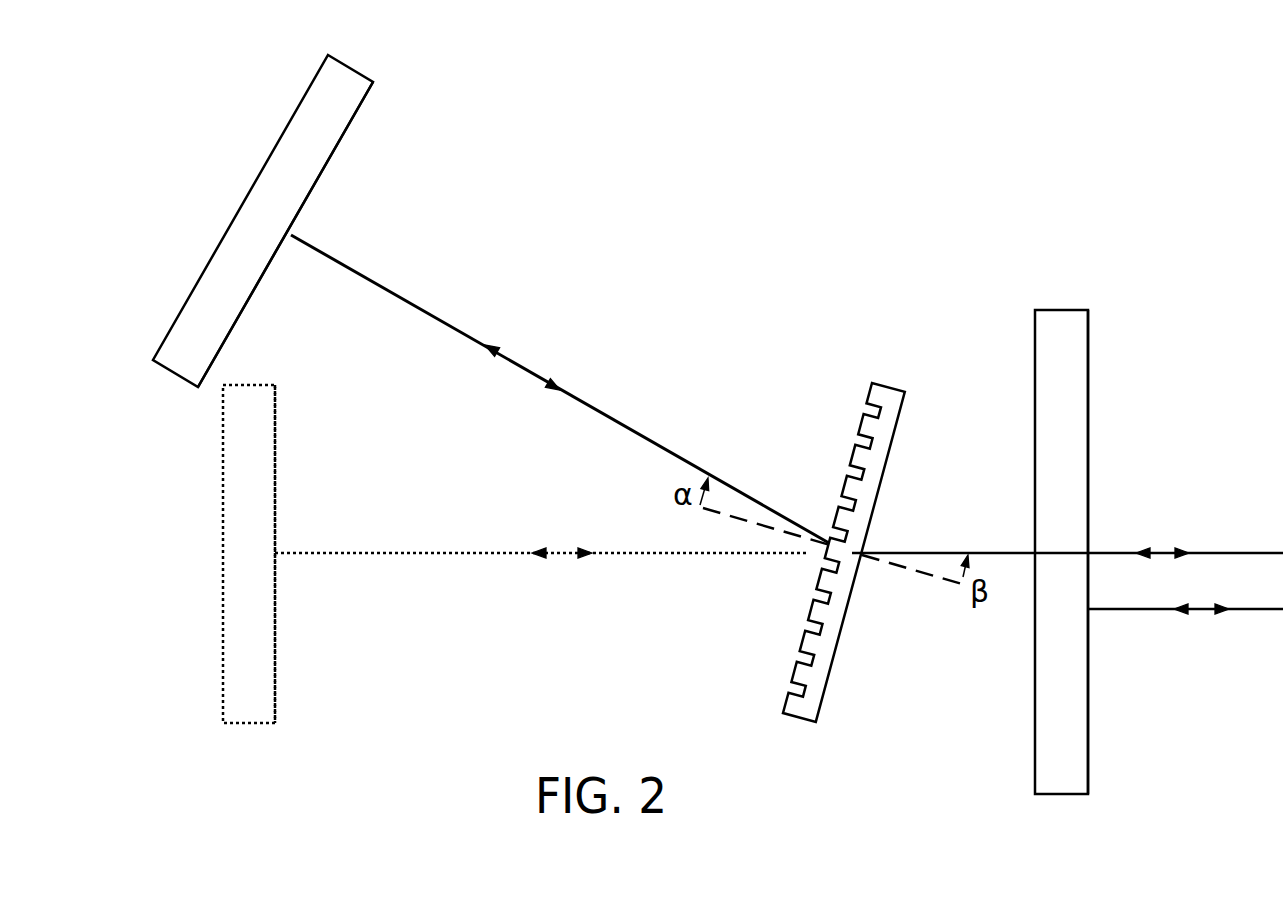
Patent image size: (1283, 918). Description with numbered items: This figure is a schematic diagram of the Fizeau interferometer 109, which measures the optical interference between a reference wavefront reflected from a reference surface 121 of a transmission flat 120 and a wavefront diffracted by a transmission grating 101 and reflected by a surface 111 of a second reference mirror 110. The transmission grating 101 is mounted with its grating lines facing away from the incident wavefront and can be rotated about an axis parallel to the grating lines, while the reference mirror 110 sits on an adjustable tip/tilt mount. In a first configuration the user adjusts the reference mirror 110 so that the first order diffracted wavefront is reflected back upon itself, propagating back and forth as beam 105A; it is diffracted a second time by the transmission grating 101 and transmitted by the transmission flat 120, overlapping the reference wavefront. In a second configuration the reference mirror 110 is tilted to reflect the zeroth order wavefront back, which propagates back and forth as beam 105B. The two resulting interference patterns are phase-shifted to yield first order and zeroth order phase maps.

The transmission grating 101 is at (887, 382).
The first order beam 105A is at (613, 418).
The zeroth order beam 105B is at (675, 555).
The Fizeau interferometer 109 is at (498, 694).
The second reference mirror 110 is at (350, 84).
The surface of second reference mirror 111 is at (347, 132).
The transmission flat 120 is at (1077, 341).
The reference surface 121 is at (1089, 711).